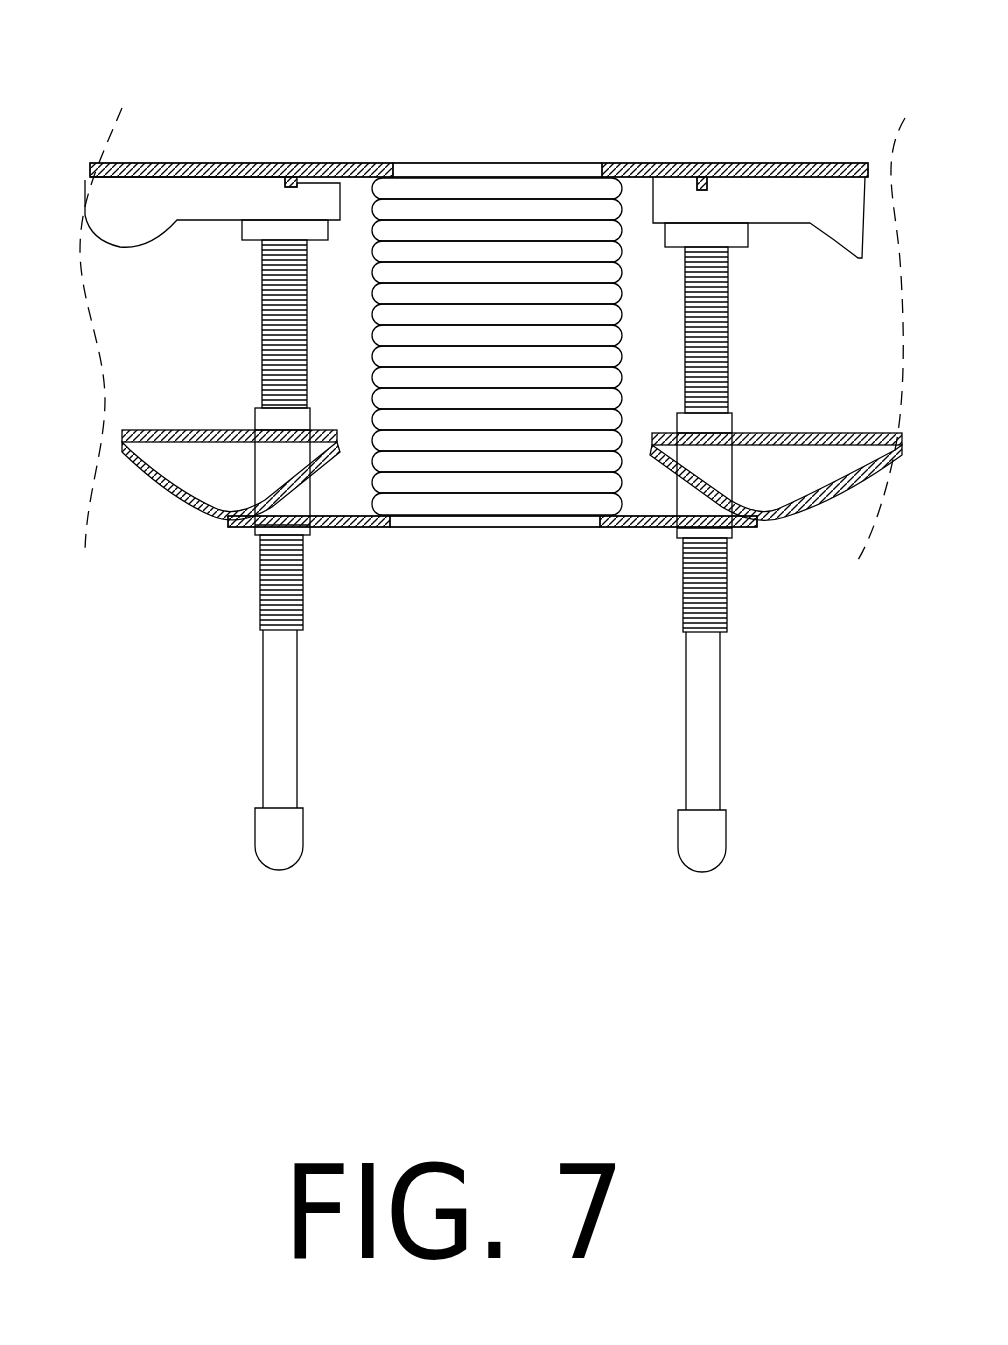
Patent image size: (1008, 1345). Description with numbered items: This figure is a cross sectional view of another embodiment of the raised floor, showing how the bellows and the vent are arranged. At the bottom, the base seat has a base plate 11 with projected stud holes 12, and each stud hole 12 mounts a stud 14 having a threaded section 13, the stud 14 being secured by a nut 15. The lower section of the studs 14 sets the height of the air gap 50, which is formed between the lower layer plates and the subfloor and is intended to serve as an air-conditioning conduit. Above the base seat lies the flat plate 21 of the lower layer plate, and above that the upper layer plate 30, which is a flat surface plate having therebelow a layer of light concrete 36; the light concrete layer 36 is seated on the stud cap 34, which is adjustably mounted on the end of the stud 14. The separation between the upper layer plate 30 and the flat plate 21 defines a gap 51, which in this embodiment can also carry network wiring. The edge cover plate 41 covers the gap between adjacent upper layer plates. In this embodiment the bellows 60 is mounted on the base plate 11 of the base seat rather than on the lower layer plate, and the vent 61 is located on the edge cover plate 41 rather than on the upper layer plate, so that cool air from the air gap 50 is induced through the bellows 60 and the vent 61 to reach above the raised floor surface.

The base plate 11 is at (643, 527).
The stud hole 12 is at (715, 467).
The threaded section 13 is at (298, 590).
The stud 14 is at (283, 722).
The nut 15 is at (298, 528).
The flat plate 21 is at (512, 402).
The upper layer plate 30 is at (745, 172).
The stud cap 34 is at (740, 236).
The light concrete layer 36 is at (228, 192).
The edge cover plate 41 is at (663, 172).
The air gap 50 is at (507, 412).
The gap 51 is at (146, 331).
The bellows 60 is at (497, 222).
The vent 61 is at (565, 172).